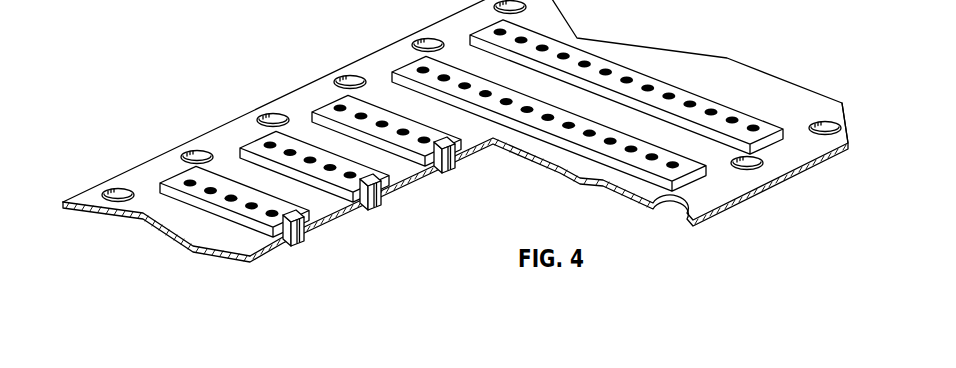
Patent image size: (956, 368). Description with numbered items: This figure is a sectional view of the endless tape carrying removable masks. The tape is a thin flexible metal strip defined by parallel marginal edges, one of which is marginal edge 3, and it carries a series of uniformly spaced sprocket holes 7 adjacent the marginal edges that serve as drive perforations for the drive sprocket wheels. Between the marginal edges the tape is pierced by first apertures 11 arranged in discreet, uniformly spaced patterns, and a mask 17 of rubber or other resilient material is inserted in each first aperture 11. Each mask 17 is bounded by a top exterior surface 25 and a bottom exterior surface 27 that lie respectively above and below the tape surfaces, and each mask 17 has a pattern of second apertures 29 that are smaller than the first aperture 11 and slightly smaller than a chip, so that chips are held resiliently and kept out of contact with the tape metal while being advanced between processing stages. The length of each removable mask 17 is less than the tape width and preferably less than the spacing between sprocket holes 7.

The marginal edge 3 is at (368, 53).
The sprocket holes 7 is at (118, 193).
The mask 17 is at (213, 183).
The top exterior surface 25 is at (163, 188).
The bottom exterior surface 27 is at (287, 245).
The second apertures 29 is at (284, 238).
The first apertures 11 is at (460, 156).